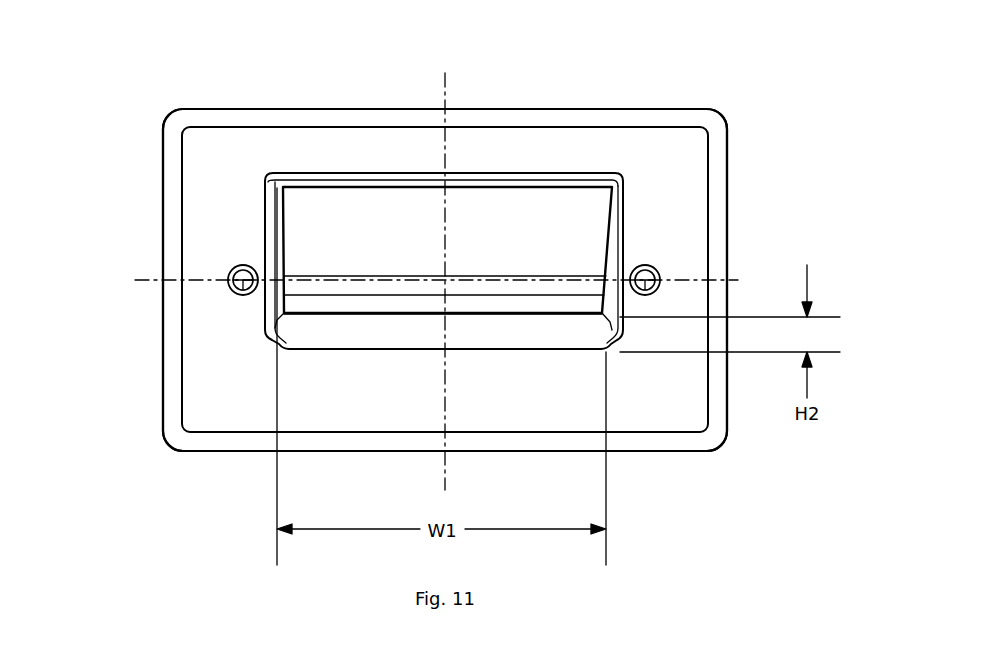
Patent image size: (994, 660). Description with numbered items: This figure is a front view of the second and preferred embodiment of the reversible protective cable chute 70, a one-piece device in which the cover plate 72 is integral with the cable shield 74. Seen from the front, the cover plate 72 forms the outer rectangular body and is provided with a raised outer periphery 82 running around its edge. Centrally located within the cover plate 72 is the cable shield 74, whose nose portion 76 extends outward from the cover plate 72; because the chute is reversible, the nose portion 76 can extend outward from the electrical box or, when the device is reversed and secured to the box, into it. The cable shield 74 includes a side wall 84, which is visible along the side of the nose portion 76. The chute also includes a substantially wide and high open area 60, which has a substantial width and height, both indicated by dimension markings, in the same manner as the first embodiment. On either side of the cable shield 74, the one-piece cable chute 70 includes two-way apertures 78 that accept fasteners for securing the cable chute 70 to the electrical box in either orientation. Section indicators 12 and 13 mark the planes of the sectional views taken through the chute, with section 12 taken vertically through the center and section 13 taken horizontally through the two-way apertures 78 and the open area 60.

The reversible protective cable chute 70 is at (128, 86).
The cover plate 72 is at (643, 110).
The cable shield 74 is at (617, 210).
The nose portion 76 is at (458, 244).
The two-way apertures 78 is at (243, 290).
The raised outer periphery 82 is at (655, 442).
The side wall 84 is at (275, 235).
The open area 60 is at (550, 330).
The section line 12- 12 is at (516, 73).
The section line 13- 13 is at (135, 280).